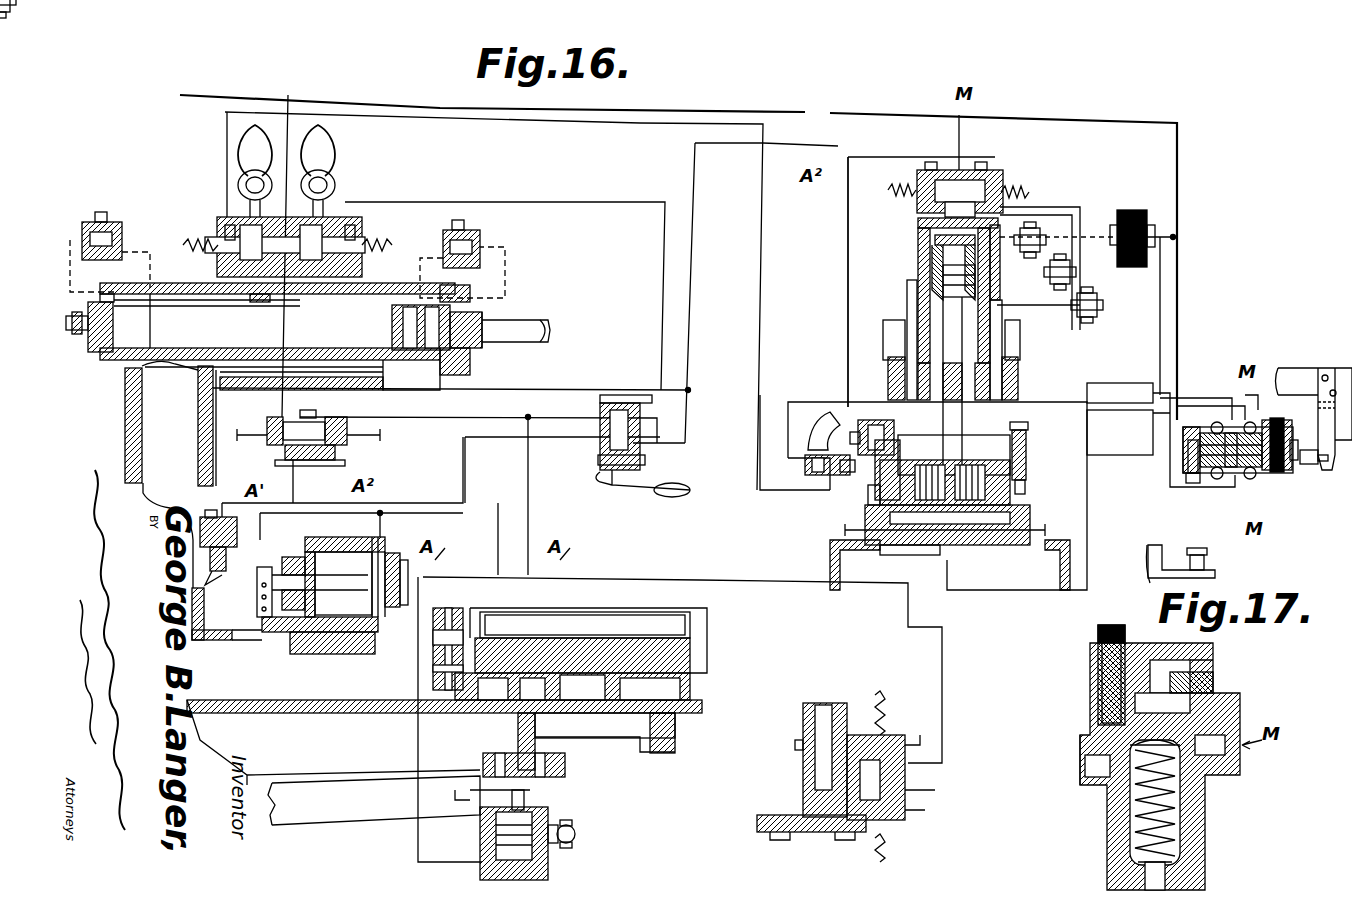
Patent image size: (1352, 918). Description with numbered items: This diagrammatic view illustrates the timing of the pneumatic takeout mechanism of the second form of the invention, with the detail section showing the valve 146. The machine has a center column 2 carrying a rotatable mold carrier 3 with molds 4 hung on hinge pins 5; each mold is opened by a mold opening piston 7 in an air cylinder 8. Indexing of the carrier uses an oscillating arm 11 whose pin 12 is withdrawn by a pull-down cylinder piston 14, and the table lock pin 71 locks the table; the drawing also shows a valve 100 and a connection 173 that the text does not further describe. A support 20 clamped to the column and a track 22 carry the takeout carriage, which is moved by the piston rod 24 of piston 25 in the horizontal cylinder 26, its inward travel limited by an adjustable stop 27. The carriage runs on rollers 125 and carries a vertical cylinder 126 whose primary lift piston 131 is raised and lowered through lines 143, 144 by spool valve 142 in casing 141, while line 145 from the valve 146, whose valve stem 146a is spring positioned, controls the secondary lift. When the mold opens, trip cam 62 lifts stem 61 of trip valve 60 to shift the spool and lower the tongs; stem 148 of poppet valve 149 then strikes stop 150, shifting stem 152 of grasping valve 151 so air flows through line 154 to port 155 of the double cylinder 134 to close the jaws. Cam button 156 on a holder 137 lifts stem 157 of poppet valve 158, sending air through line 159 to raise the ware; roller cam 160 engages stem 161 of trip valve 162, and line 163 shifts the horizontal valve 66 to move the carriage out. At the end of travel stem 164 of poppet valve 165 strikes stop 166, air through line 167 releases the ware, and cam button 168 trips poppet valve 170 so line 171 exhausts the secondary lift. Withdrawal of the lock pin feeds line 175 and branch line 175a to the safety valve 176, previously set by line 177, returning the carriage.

In FIG. 16, the center column 2 is at (162, 387).
In FIG. 16, the mold carrier 3 is at (368, 705).
In FIG. 16, the mold 4 is at (690, 665).
In FIG. 16, the hinge pin 5 is at (446, 632).
In FIG. 16, the mold opening piston 7 is at (412, 558).
In FIG. 16, the air cylinder 8 is at (345, 560).
In FIG. 16, the oscillating arm 11 is at (330, 800).
In FIG. 16, the pin 12 is at (525, 772).
In FIG. 16, the pull-down cylinder piston 14 is at (548, 860).
In FIG. 16, the support 20 is at (133, 428).
In FIG. 16, the track 22 is at (1020, 375).
In FIG. 16, the piston rod 24 is at (540, 328).
In FIG. 16, the piston 25 is at (404, 330).
In FIG. 16, the cylinder 26 is at (271, 336).
In FIG. 16, the adjustable limiting stop 27 is at (80, 332).
In FIG. 16, the grasping unit lowering trip valve 60 is at (230, 545).
In FIG. 16, the stem 61 is at (223, 583).
In FIG. 16, the trip cam 62 is at (270, 568).
In FIG. 16, the horizontal movement controlling valve 66 is at (360, 235).
In FIG. 16, the table lock pin 71 is at (828, 705).
In FIG. 16, the hand valve 100 is at (640, 462).
In FIG. 16, the rollers 125 is at (900, 320).
In FIG. 16, the vertically disposed cylinder 126 is at (928, 275).
In FIG. 16, the piston 131 is at (977, 282).
In FIG. 16, the double cylinder 134 is at (975, 530).
In FIG. 16, the holder 137 is at (850, 522).
In FIG. 16, the casing 141 is at (1002, 182).
In FIG. 16, the spool valve 142 is at (975, 170).
In FIG. 16, the line 143 is at (1062, 303).
In FIG. 16, the line 144 is at (1048, 206).
In FIG. 16, the line 145 is at (1105, 215).
In FIG. 17, the line 145 is at (1048, 767).
In FIG. 16, the valve 146 is at (1150, 256).
In FIG. 17, the valve 146 is at (1216, 800).
In FIG. 17, the valve stem 146a is at (1195, 823).
In FIG. 16, the stem 148 is at (1188, 475).
In FIG. 16, the poppet valve 149 is at (1183, 462).
In FIG. 16, the adjustable stop member 150 is at (1215, 565).
In FIG. 16, the grasping cylinder operating valve 151 is at (1248, 477).
In FIG. 16, the valve stem 152 is at (1228, 455).
In FIG. 16, the line 154 is at (800, 393).
In FIG. 16, the port 155 is at (952, 468).
In FIG. 16, the adjustable cam button 156 is at (868, 495).
In FIG. 16, the stem 157 is at (892, 525).
In FIG. 16, the poppet valve 158 is at (898, 462).
In FIG. 16, the line 159 is at (845, 300).
In FIG. 16, the roller cam member 160 is at (870, 428).
In FIG. 16, the stem 161 is at (848, 475).
In FIG. 16, the horizontal cylinder trip valve 162 is at (815, 475).
In FIG. 16, the line 163 is at (757, 430).
In FIG. 16, the stem 164 is at (1278, 465).
In FIG. 16, the poppet valve 165 is at (1295, 420).
In FIG. 16, the adjustable stop member 166 is at (1312, 466).
In FIG. 16, the line 167 is at (1195, 400).
In FIG. 16, the adjustable cam button 168 is at (1026, 488).
In FIG. 16, the poppet valve 170 is at (1028, 468).
In FIG. 16, the line 171 is at (1112, 455).
In FIG. 17, the line 171 is at (1226, 675).
In FIG. 16, the pipe 173 is at (428, 745).
In FIG. 16, the line 175 is at (944, 630).
In FIG. 16, the branch line 175a is at (470, 391).
In FIG. 16, the table rotating safety valve 176 is at (352, 436).
In FIG. 16, the line 177 is at (272, 418).